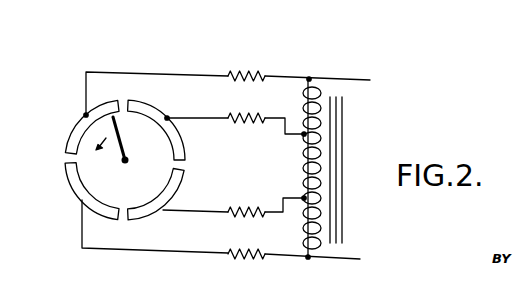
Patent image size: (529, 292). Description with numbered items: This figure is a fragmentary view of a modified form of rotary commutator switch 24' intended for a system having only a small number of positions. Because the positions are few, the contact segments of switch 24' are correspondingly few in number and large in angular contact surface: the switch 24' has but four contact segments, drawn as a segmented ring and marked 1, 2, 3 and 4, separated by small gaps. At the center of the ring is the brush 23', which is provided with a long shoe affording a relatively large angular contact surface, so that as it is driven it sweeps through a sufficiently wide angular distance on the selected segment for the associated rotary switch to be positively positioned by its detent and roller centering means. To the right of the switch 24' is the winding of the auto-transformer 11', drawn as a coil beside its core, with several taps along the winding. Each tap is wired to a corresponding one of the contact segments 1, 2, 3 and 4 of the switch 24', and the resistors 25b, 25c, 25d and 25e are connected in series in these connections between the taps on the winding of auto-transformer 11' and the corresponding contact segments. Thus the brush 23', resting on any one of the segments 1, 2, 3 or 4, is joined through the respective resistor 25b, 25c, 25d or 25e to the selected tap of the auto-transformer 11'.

The first contact segment 1 is at (156, 130).
The second contact segment 2 is at (92, 127).
The third contact segment 3 is at (47, 212).
The fourth contact segment 4 is at (156, 194).
The auto-transformer 11' is at (344, 167).
The brush 23' is at (125, 140).
The rotary commutator switch 24' is at (102, 160).
The resistor 25b is at (231, 72).
The resistor 25c is at (231, 114).
The resistor 25d is at (231, 207).
The resistor 25e is at (231, 250).